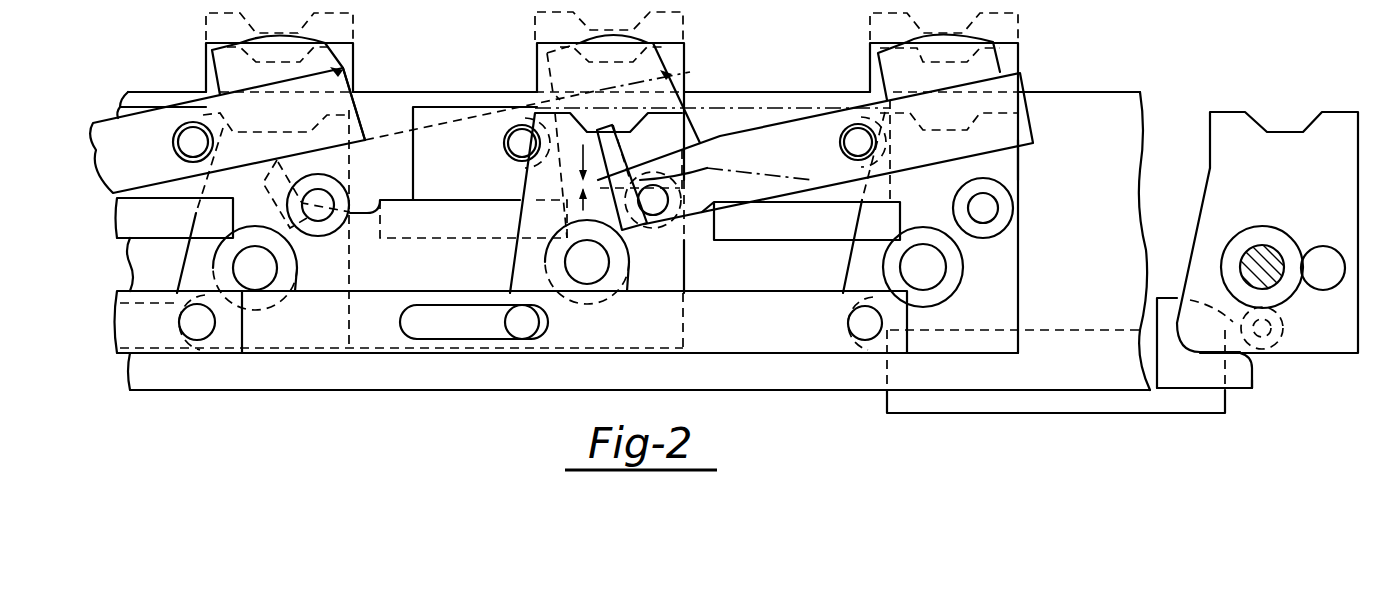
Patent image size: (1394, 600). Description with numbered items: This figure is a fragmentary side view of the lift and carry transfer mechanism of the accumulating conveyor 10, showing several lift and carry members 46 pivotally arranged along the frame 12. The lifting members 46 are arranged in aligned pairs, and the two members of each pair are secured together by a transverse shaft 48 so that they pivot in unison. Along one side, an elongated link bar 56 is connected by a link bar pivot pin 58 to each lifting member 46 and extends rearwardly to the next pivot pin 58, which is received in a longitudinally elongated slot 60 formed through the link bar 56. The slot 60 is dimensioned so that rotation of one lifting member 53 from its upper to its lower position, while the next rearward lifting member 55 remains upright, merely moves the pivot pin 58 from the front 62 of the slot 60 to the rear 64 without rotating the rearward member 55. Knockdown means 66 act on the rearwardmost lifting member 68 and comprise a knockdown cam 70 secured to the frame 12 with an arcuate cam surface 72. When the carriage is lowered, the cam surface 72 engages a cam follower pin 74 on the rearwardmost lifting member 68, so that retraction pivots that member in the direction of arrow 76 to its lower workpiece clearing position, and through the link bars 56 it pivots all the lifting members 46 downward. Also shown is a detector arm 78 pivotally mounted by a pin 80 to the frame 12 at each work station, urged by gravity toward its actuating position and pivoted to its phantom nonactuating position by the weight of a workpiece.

The lift and carry accumulating conveyor 10 is at (1194, 430).
The frame 12 is at (1150, 407).
The lift and carry member 46 is at (1013, 180).
The shaft 48 is at (930, 275).
The lifting member 53 is at (1025, 157).
The rearward lifting member 55 is at (517, 258).
The link bar 56 is at (752, 343).
The link bar pivot pin 58 is at (517, 323).
The slot 60 is at (450, 328).
The front of slot 62 is at (533, 335).
The rear of slot 64 is at (415, 327).
The knockdown means 66 is at (1253, 392).
The rearwardmost lifting member 68 is at (1367, 110).
The knockdown cam 70 is at (1195, 380).
The arcuate cam surface 72 is at (1253, 383).
The cam follower pin 74 is at (1288, 325).
The arrow 76 is at (1222, 219).
The detector arm 78 is at (462, 120).
The pin 80 is at (510, 143).